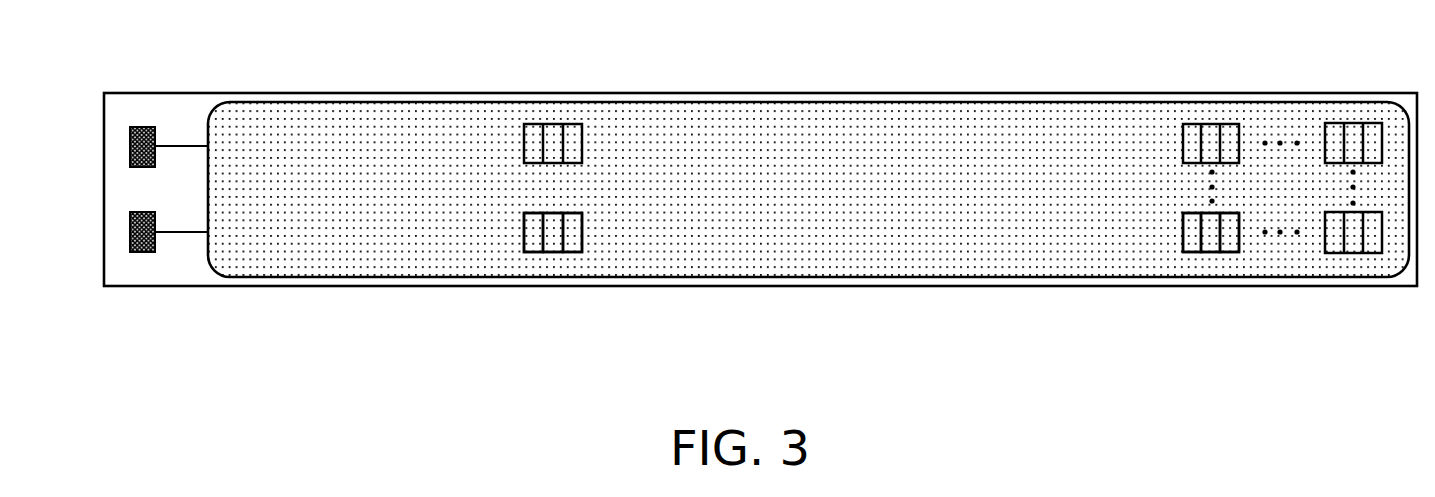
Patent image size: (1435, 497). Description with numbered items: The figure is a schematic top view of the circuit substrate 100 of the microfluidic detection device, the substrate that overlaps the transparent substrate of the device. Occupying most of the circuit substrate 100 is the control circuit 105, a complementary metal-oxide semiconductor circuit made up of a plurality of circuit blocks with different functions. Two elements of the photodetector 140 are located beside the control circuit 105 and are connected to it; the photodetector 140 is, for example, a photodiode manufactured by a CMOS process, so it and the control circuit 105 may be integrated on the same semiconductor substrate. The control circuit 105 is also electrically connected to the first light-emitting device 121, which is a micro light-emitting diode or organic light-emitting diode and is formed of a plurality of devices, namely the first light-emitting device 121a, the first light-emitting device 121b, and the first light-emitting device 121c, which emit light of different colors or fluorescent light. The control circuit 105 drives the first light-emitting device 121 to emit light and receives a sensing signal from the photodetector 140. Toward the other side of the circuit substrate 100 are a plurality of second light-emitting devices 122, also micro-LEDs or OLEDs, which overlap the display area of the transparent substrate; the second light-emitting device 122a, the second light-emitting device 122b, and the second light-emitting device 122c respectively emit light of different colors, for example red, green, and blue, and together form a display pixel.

The circuit substrate 100 is at (663, 93).
The control circuit 105 is at (813, 125).
The photodetector 140 is at (130, 216).
The first light-emitting device 121 is at (558, 258).
The first light-emitting device 121a is at (532, 243).
The first light-emitting device 121b is at (551, 243).
The first light-emitting device 121c is at (611, 281).
The second light-emitting devices 122 is at (1247, 258).
The second light-emitting device 122a is at (1190, 243).
The second light-emitting device 122b is at (1211, 243).
The second light-emitting device 122c is at (1271, 282).